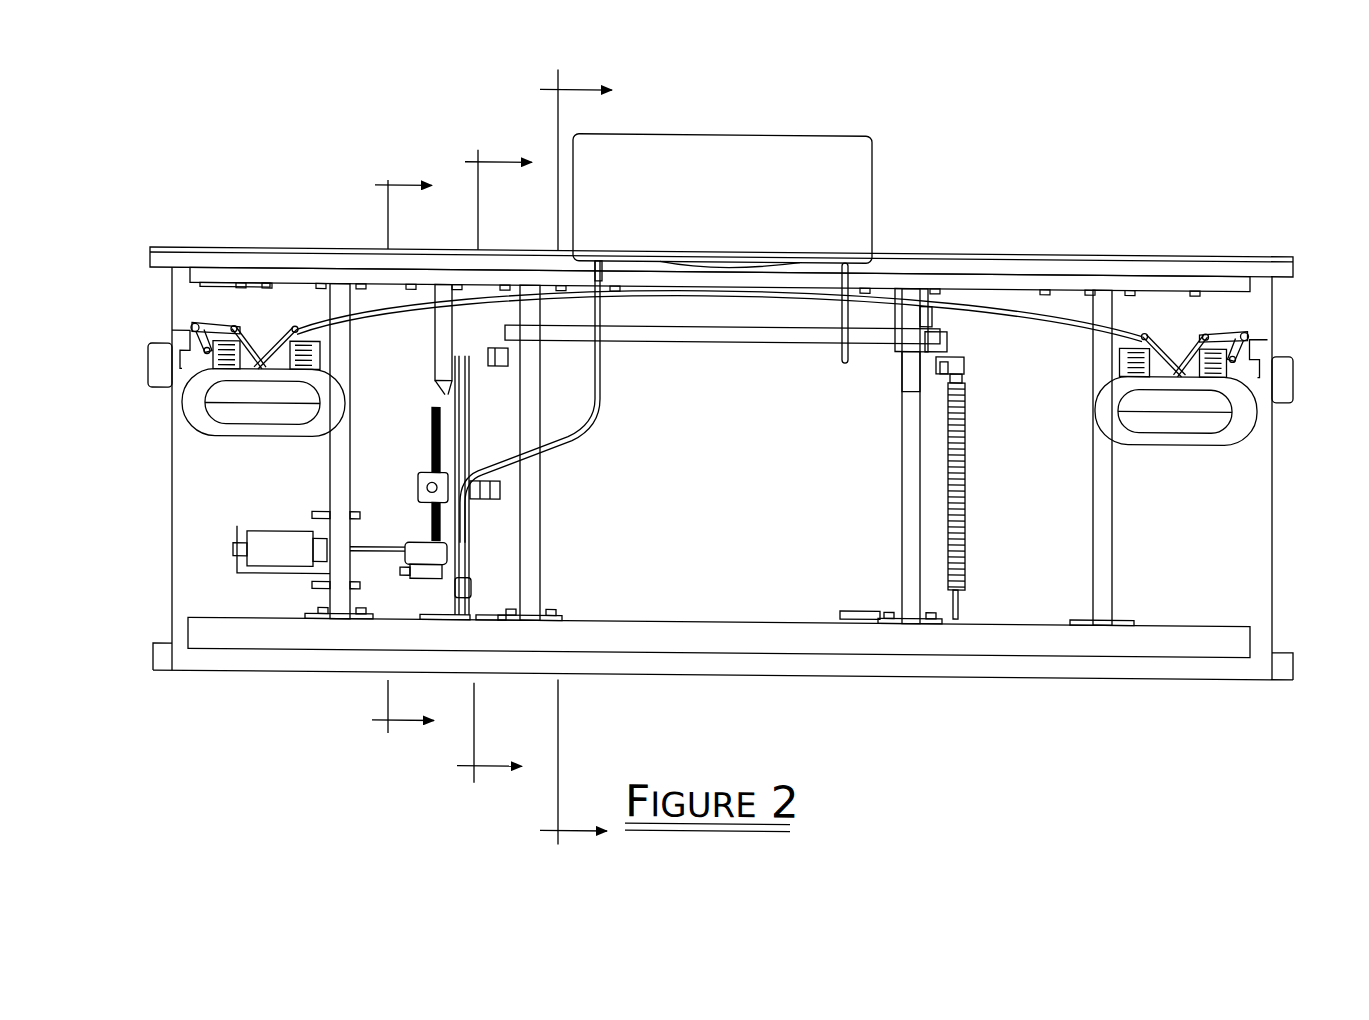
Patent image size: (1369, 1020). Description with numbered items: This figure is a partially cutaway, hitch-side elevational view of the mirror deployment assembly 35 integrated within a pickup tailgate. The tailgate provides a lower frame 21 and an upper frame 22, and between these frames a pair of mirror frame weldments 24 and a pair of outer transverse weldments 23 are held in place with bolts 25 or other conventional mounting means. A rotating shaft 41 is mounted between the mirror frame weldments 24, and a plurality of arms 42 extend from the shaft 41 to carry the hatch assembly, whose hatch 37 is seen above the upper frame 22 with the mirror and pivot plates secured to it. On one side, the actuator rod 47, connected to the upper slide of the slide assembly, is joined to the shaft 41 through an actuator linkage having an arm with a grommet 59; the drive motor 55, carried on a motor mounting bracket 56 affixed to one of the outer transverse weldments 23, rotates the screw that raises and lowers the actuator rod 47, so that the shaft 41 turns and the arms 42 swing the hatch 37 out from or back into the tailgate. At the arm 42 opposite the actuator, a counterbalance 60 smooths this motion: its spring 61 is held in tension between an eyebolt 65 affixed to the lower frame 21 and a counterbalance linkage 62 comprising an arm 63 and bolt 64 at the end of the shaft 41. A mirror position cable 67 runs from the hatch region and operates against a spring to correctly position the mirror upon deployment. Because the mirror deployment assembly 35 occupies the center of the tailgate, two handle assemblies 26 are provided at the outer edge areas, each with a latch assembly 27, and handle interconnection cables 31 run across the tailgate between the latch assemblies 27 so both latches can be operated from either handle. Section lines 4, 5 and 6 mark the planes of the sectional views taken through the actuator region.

The section line 4- 4 is at (386, 455).
The section line 5- 5 is at (478, 464).
The section line 6- 6 is at (561, 458).
The lower frame 21 is at (1178, 636).
The upper frame 22 is at (1195, 278).
The outer transverse weldments 23 is at (330, 457).
The mirror frame weldments 24 is at (540, 578).
The bolts 25 is at (292, 282).
The handle assemblies 26 is at (197, 447).
The latch assemblies 27 is at (200, 313).
The handle interconnection cables 31 is at (1005, 285).
The mirror deployment assembly 35 is at (955, 171).
The hatch 37 is at (780, 141).
The rotating shaft 41 is at (720, 330).
The arms 42 is at (838, 304).
The actuator rod 47 is at (490, 415).
The drive motor 55 is at (272, 535).
The motor bracket 56 is at (232, 570).
The grommet 59 is at (500, 357).
The counterbalance 60 is at (935, 458).
The spring 61 is at (966, 538).
The counterbalance linkage 62 is at (912, 374).
The arm 63 is at (950, 350).
The bolt 64 is at (968, 365).
The eyebolt 65 is at (966, 608).
The mirror position cable 67 is at (583, 428).